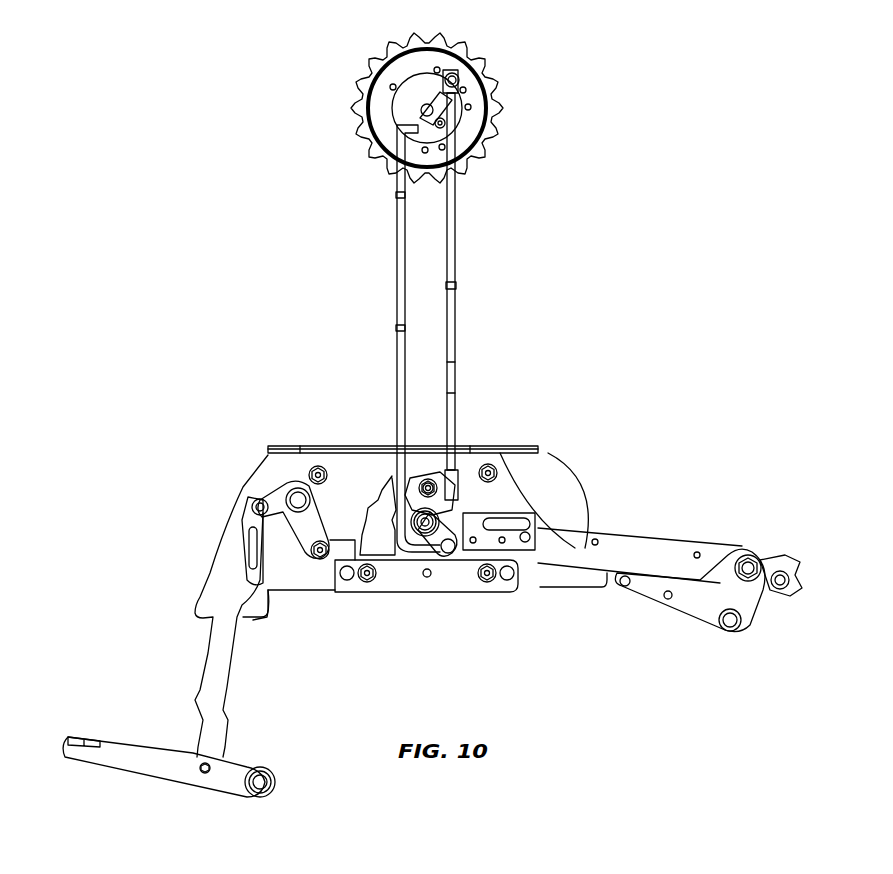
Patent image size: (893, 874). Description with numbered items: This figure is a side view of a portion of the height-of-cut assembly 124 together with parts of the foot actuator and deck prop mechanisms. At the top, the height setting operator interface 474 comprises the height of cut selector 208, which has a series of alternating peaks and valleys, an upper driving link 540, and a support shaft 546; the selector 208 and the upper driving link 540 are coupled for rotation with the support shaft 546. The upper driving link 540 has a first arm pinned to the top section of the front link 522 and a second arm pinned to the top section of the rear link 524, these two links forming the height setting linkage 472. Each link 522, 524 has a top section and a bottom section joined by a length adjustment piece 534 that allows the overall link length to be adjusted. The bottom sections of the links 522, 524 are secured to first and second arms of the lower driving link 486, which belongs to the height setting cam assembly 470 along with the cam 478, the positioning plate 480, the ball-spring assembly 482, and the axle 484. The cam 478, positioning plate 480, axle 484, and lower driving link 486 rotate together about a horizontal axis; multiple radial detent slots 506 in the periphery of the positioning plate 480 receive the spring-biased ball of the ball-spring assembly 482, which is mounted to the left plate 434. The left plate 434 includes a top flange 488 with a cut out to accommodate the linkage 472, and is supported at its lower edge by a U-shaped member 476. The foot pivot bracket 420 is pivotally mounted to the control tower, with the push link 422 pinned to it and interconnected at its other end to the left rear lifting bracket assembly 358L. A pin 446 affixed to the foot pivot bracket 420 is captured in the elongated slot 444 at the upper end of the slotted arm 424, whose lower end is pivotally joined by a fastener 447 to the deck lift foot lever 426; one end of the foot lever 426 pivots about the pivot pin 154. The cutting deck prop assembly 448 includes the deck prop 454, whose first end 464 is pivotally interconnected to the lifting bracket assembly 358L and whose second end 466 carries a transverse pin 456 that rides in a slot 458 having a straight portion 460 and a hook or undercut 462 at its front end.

The height-of-cut assembly 124 is at (287, 205).
The pivot pin 154 is at (270, 782).
The height of cut selector 208 is at (443, 40).
The left rear lifting bracket assembly 358L is at (781, 532).
The foot pivot bracket 420 is at (305, 470).
The push link 422 is at (393, 495).
The slotted arm 424 is at (215, 650).
The deck lift foot lever 426 is at (140, 758).
The left plate 434 is at (553, 520).
The elongated slot 444 is at (252, 548).
The pin 446 is at (255, 500).
The fastener 447 is at (205, 775).
The cutting deck prop assembly 448 is at (633, 498).
The deck prop 454 is at (685, 547).
The transverse pin 456 is at (560, 542).
The slot 458 is at (483, 511).
The straight portion 460 is at (505, 525).
The hook or undercut 462 is at (528, 537).
The first end 464 is at (727, 557).
The second end 466 is at (545, 565).
The height setting cam assembly 470 is at (370, 552).
The height setting linkage 472 is at (372, 288).
The height setting operator interface 474 is at (352, 72).
The U-shaped member 476 is at (495, 590).
The cam 478 is at (372, 492).
The positioning plate 480 is at (420, 536).
The ball-spring assembly 482 is at (428, 478).
The axle 484 is at (442, 562).
The lower driving link 486 is at (490, 590).
The top flange 488 is at (500, 455).
The radial detent slots 506 is at (365, 552).
The front link 522 is at (453, 218).
The rear link 524 is at (397, 222).
The length adjustment piece 534 is at (456, 378).
The upper driving link 540 is at (422, 100).
The support shaft 546 is at (445, 110).